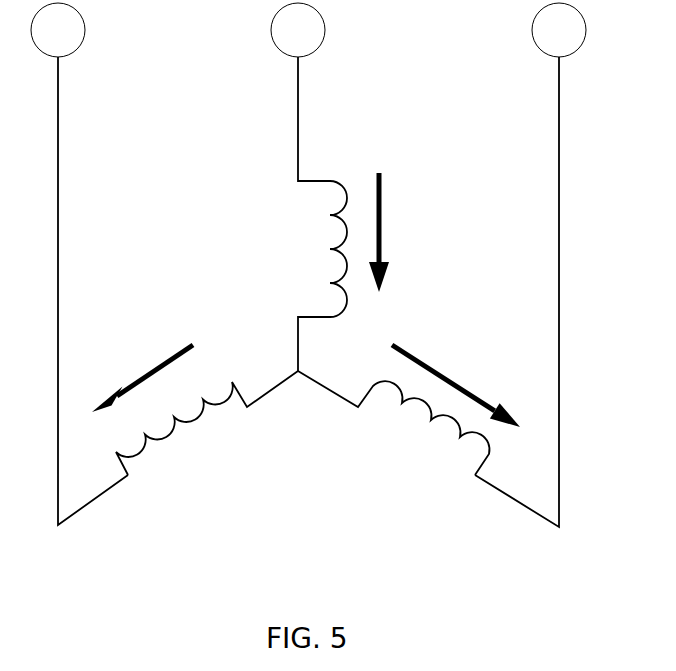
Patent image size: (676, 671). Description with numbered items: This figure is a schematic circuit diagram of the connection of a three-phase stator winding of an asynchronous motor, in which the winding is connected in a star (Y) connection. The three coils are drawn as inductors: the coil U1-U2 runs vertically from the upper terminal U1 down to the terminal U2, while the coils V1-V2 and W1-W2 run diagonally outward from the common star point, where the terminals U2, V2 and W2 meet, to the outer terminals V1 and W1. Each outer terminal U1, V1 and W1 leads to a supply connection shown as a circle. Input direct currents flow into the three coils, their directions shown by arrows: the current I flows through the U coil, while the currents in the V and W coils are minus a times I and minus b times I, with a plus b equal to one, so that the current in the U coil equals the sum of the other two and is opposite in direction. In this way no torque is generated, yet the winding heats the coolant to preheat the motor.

The coil terminal U1 is at (311, 160).
The coil terminal U2 is at (322, 344).
The coil terminal V1 is at (530, 286).
The coil terminal V2 is at (394, 423).
The coil terminal W1 is at (79, 286).
The coil terminal W2 is at (207, 423).
The direct current I is at (388, 232).